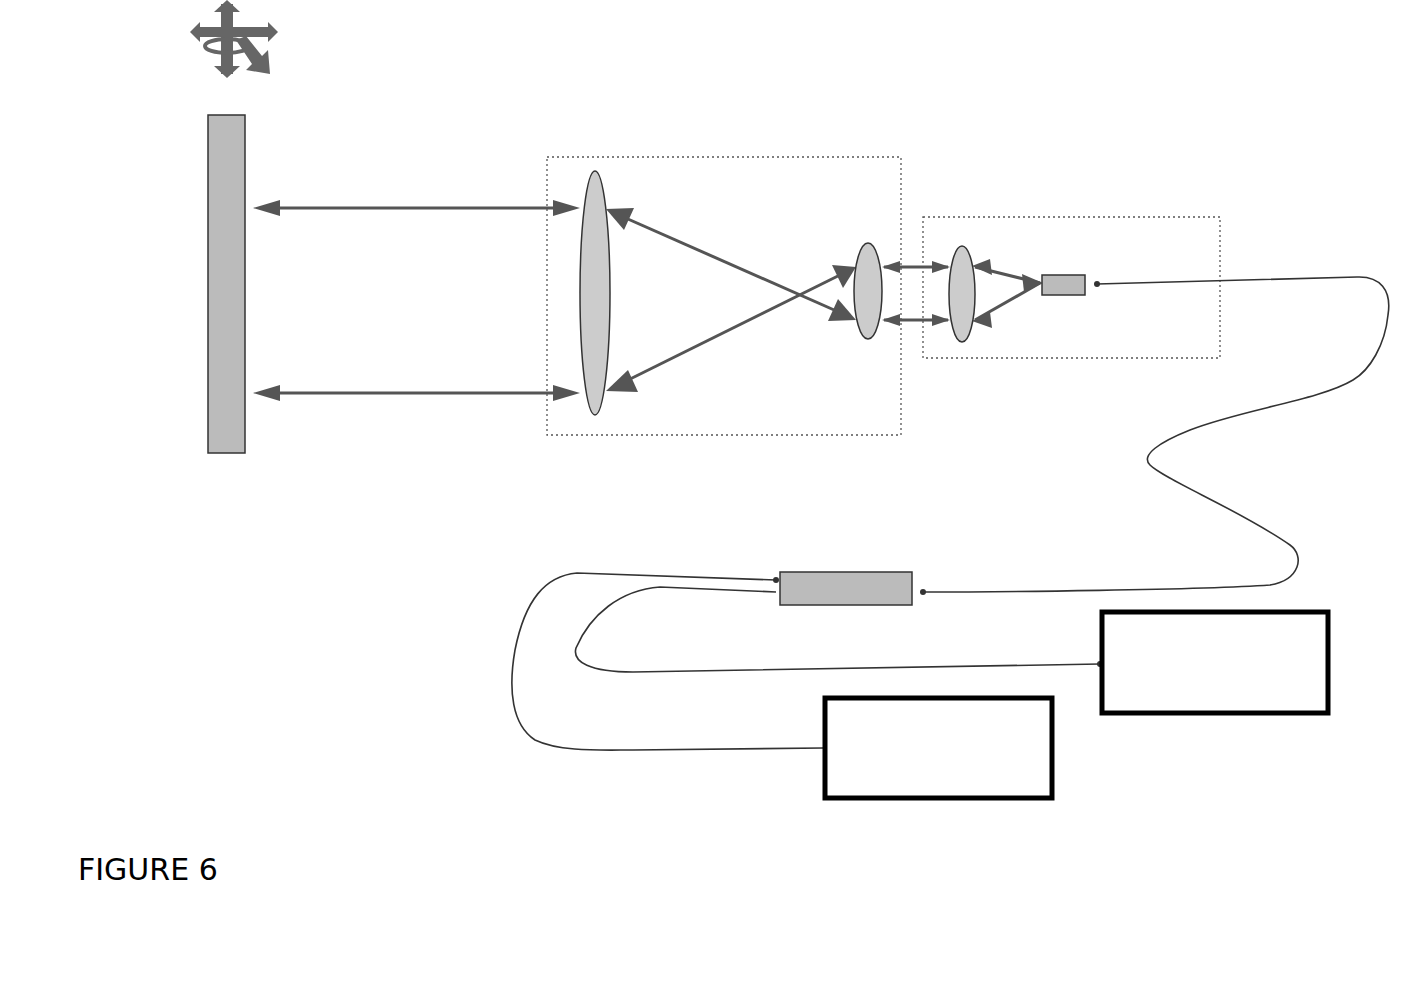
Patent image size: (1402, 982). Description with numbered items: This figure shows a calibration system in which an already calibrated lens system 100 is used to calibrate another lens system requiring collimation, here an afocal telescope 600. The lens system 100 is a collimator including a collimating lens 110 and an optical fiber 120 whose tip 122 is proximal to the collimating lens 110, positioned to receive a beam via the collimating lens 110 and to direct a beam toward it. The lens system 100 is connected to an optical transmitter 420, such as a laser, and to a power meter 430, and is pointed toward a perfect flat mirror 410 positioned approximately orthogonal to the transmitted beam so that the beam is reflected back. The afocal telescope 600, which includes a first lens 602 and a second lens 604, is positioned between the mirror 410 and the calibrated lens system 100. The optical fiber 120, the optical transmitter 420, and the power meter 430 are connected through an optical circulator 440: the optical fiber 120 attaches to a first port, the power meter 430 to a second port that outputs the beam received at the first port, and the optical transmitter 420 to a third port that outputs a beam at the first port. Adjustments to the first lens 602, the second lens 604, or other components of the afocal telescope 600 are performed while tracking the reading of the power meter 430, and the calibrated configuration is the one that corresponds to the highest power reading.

The perfect flat mirror 410 is at (238, 150).
The afocal telescope 600 is at (724, 296).
The first lens 602 is at (598, 405).
The second lens 604 is at (870, 338).
The lens system 100 is at (1071, 272).
The collimating lens 110 is at (962, 250).
The tip 122 is at (1066, 277).
The optical fiber 120 is at (1283, 275).
The optical circulator 440 is at (895, 572).
The power meter 430 is at (1215, 662).
The optical transmitter 420 is at (938, 748).